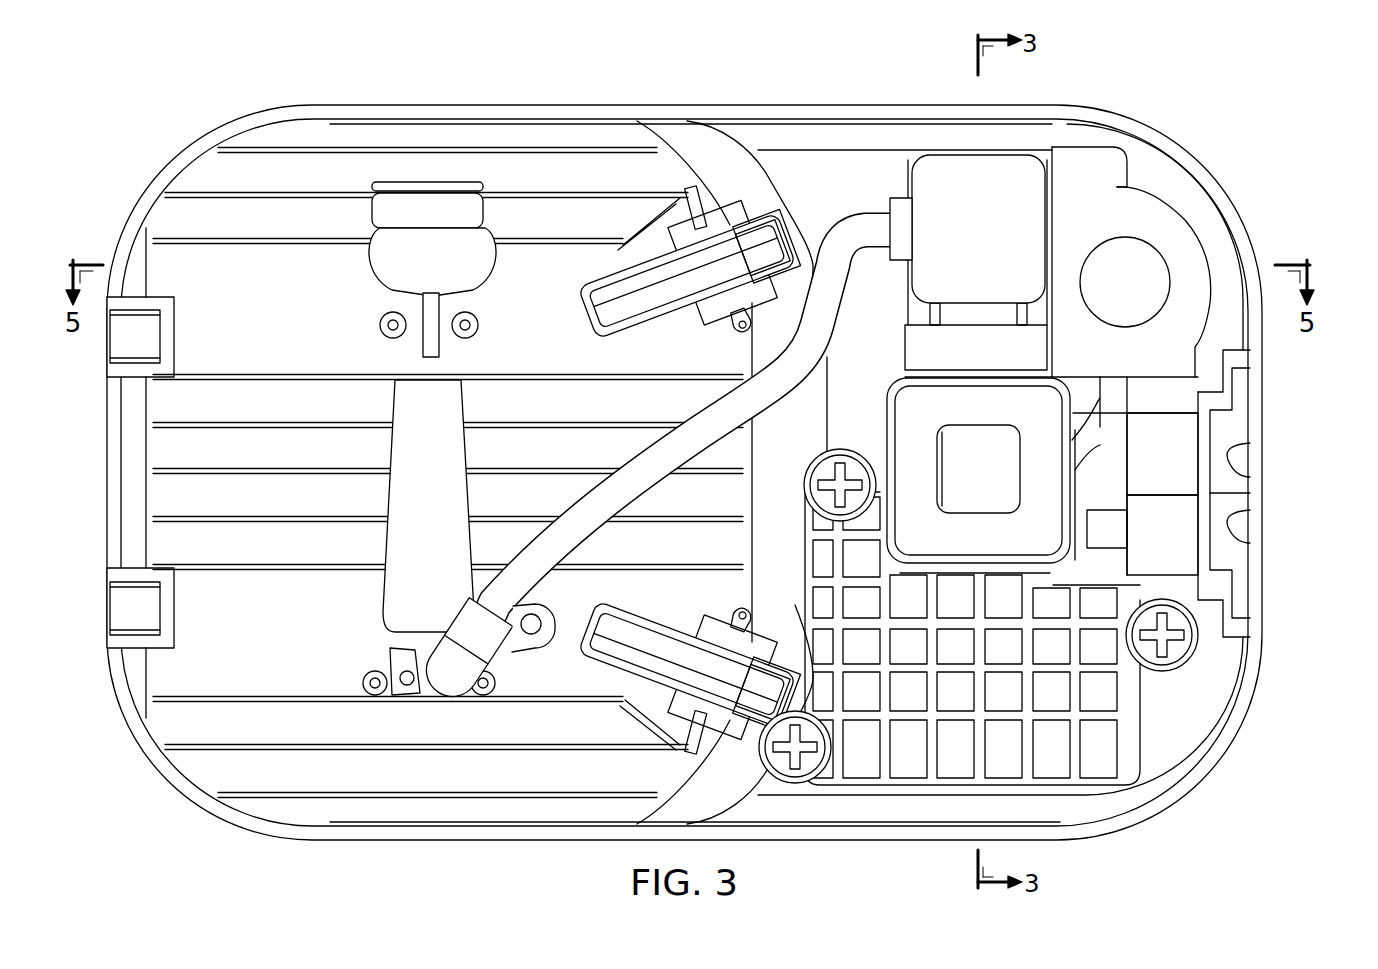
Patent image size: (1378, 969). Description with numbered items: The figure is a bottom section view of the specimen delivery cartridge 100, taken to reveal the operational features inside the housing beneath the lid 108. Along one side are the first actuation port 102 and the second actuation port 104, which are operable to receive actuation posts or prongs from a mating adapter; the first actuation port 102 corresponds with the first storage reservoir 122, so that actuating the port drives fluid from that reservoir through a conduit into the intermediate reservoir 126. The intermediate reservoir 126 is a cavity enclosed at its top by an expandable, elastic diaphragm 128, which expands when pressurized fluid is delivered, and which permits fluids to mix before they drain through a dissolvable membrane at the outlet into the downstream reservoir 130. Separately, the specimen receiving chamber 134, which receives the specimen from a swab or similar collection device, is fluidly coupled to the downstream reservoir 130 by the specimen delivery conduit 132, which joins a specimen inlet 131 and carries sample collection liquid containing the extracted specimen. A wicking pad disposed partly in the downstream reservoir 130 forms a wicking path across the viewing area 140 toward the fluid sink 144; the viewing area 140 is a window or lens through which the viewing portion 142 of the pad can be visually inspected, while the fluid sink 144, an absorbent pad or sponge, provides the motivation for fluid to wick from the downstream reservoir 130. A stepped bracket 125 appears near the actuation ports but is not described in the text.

The specimen delivery cartridge 100 is at (176, 118).
The first actuation port 102 is at (1242, 457).
The second actuation port 104 is at (1242, 530).
The lid 108 is at (805, 842).
The first storage reservoir 122 is at (1158, 420).
The stepped bracket 125 is at (1180, 557).
The intermediate reservoir 126 is at (1103, 158).
The expandable, elastic diaphragm 128 is at (1152, 258).
The downstream reservoir 130 is at (1008, 166).
The specimen inlet 131 is at (890, 200).
The specimen delivery conduit 132 is at (840, 232).
The specimen receiving chamber 134 is at (385, 452).
The viewing area 140 is at (958, 440).
The viewing portion 142 is at (950, 445).
The fluid sink 144 is at (910, 760).